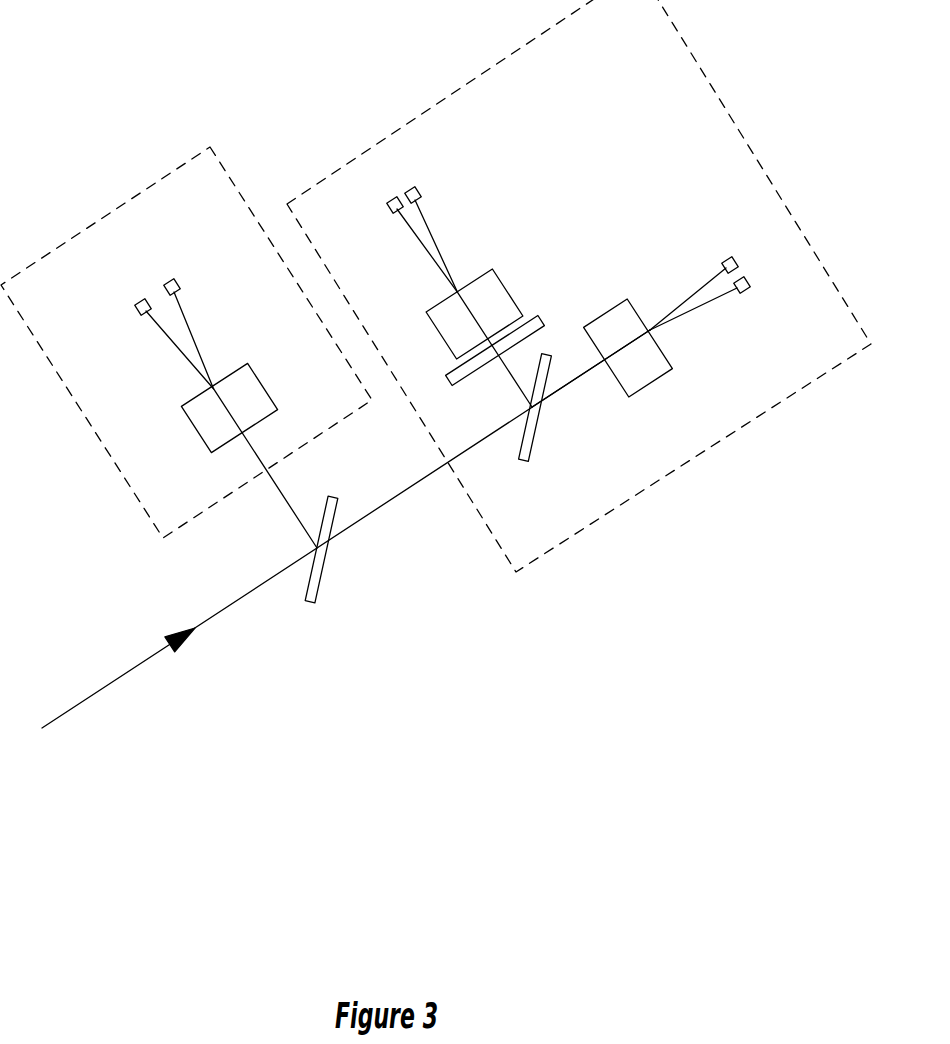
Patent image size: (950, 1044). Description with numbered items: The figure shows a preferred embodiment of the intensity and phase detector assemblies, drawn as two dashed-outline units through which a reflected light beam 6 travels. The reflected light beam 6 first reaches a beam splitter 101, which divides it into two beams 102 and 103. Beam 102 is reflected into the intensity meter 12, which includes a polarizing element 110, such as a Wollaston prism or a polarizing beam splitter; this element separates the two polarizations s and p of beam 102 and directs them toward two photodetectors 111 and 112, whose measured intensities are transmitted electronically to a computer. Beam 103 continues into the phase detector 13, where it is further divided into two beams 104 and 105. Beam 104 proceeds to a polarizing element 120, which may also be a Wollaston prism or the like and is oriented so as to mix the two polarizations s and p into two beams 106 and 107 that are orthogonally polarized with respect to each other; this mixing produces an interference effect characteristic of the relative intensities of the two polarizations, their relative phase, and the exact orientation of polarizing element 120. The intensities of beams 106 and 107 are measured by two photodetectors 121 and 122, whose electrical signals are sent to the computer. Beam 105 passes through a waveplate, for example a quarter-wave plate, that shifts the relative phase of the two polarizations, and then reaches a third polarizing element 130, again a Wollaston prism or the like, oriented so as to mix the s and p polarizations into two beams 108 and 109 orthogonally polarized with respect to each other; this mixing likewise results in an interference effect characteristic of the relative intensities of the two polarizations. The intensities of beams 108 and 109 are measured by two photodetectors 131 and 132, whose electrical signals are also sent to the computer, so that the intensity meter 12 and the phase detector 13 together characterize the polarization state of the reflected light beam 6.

The reflected light beam 6 is at (131, 664).
The intensity meter 12 is at (153, 183).
The phase detector 13 is at (725, 103).
The beam splitter 101 is at (320, 592).
The beam 102 is at (282, 490).
The beam 103 is at (410, 486).
The beam 104 is at (566, 384).
The beam 105 is at (508, 370).
The beam 106 is at (719, 299).
The beam 107 is at (700, 286).
The beam 108 is at (426, 214).
The beam 109 is at (408, 234).
The polarizing element 110 is at (200, 443).
The photodetector 111 is at (138, 302).
The photodetector 112 is at (170, 277).
The polarizing element 120 is at (645, 392).
The photodetector 121 is at (735, 260).
The photodetector 122 is at (748, 280).
The third polarizing element 130 is at (515, 295).
The photodetector 131 is at (393, 200).
The photodetector 132 is at (547, 315).